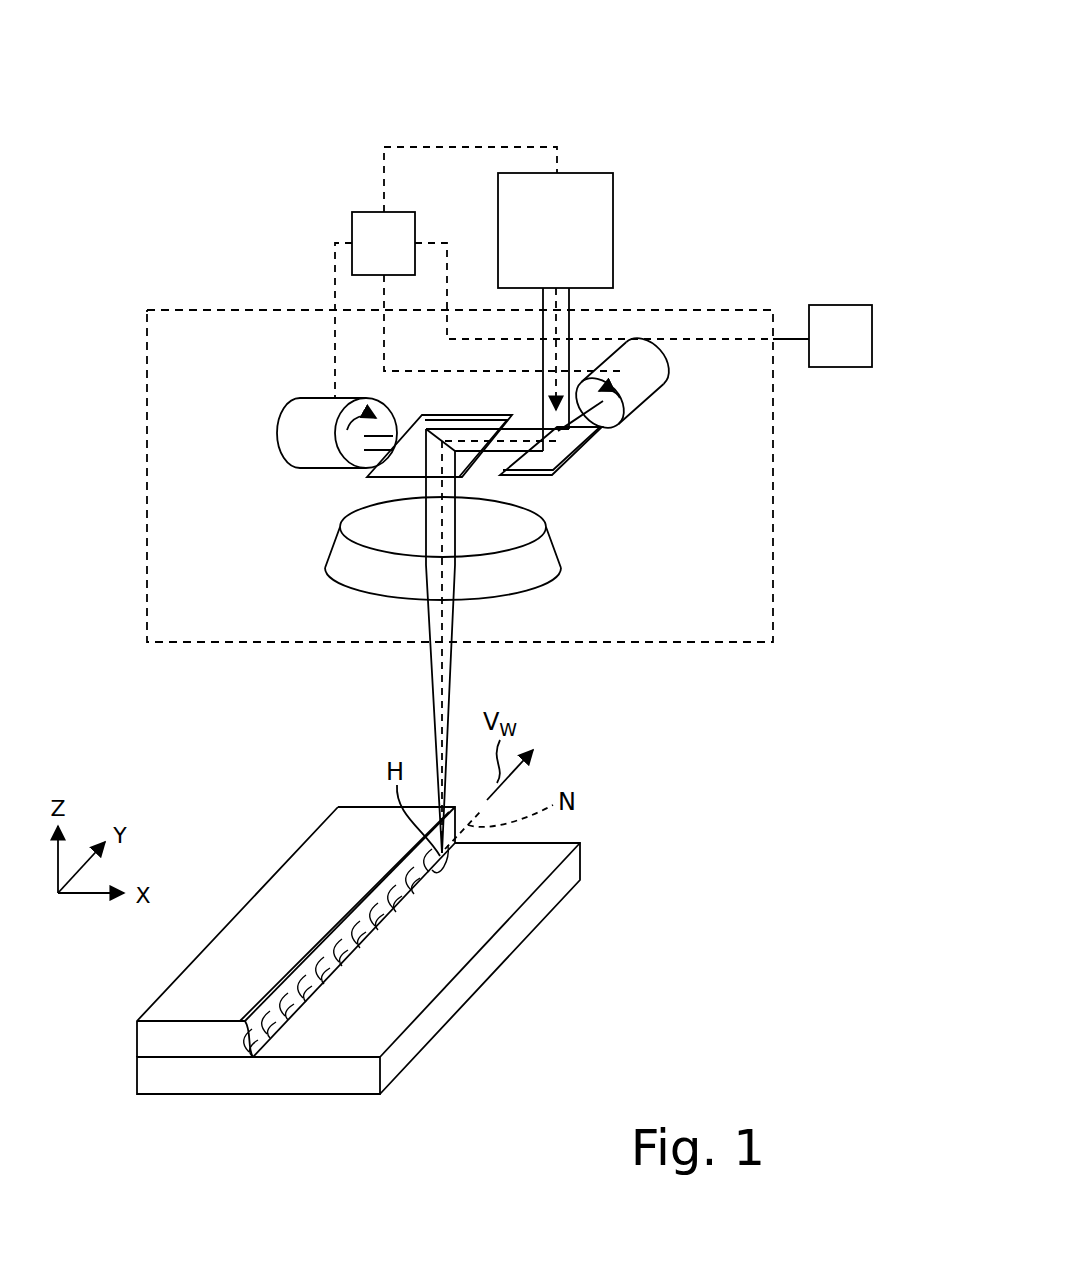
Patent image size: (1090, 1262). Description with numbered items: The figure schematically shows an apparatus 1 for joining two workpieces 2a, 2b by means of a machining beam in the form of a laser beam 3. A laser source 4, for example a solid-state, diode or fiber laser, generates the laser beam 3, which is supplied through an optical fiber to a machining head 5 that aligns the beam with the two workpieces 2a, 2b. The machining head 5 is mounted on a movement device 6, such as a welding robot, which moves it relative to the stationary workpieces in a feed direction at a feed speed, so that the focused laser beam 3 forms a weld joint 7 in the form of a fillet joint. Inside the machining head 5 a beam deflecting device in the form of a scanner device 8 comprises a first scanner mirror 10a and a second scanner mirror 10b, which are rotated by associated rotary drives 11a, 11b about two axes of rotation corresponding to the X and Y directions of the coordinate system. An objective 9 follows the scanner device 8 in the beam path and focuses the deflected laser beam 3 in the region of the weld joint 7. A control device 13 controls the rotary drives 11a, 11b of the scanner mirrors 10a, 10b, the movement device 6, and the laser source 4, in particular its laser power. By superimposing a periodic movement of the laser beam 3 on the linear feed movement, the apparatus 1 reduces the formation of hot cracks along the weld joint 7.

The apparatus 1 is at (680, 120).
The workpiece 2a is at (333, 1076).
The workpiece 2b is at (347, 833).
The laser beam 3 is at (556, 390).
The laser source 4 is at (595, 238).
The machining head 5 is at (773, 518).
The movement device 6 is at (842, 312).
The weld joint 7 is at (256, 1031).
The scanner device 8 is at (264, 386).
The objective 9 is at (347, 563).
The first scanner mirror 10a is at (424, 452).
The second scanner mirror 10b is at (547, 457).
The rotary drive 11a is at (300, 436).
The rotary drive 11b is at (637, 385).
The control device 13 is at (365, 225).